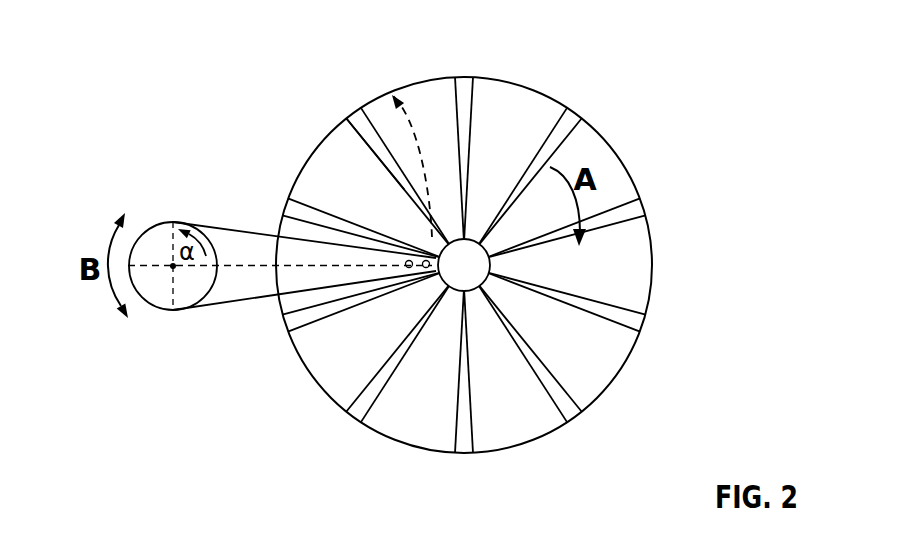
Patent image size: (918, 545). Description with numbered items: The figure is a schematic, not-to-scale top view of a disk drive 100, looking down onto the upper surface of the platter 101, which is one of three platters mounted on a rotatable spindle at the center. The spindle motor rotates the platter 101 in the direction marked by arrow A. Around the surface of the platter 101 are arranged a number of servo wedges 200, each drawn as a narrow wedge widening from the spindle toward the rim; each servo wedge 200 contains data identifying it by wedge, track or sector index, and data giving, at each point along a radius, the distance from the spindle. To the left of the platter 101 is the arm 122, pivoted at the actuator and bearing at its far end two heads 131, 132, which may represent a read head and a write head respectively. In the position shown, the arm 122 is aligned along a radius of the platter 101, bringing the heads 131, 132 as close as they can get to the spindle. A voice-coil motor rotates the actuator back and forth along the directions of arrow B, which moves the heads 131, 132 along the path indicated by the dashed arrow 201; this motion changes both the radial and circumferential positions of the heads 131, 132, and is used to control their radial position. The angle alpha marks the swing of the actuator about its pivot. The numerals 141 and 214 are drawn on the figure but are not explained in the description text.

The disk drive 100 is at (199, 32).
The platter 101 is at (400, 88).
The servo wedge 200 is at (465, 85).
The dashed arrow 201 is at (412, 135).
The arm 122 is at (203, 223).
The web material 141 is at (233, 263).
The web guide line 214 is at (328, 266).
The head 132 is at (409, 268).
The head 131 is at (426, 268).